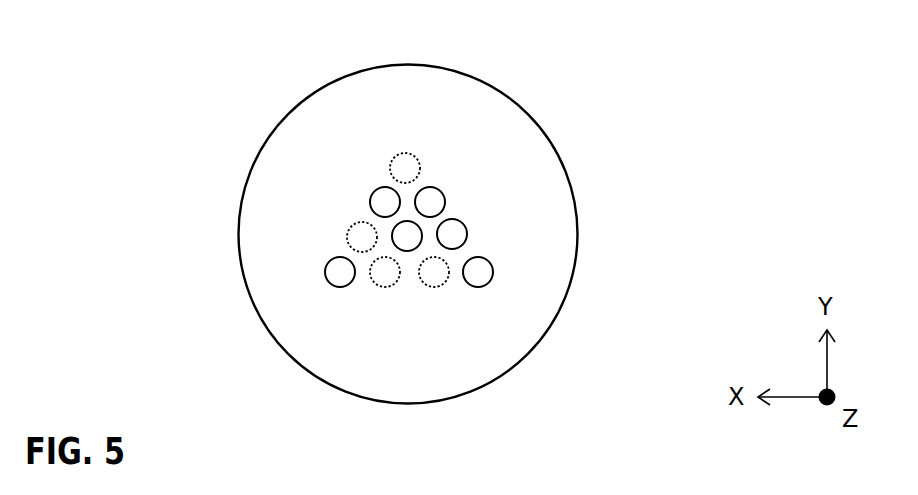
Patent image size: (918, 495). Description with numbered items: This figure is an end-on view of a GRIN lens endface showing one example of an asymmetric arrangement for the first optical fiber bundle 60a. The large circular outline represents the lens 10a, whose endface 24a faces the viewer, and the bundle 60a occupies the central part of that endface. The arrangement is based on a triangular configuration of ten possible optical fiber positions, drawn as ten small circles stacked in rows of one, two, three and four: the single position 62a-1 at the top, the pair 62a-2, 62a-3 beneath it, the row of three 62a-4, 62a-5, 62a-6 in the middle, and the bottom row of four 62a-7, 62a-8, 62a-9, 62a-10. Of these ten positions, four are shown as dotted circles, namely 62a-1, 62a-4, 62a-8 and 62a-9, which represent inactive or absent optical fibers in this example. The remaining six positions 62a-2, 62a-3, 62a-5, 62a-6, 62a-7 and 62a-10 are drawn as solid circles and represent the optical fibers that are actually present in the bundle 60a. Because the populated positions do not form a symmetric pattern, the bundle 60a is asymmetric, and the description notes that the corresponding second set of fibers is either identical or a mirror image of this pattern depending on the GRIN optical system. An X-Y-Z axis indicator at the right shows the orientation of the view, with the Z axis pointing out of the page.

The ferrule 10a is at (301, 95).
The end face 24a is at (510, 128).
The first optical fiber bundle 60a is at (579, 115).
The optical fiber position 62a-1 is at (408, 152).
The optical fiber 62a-2 is at (373, 192).
The optical fiber 62a-3 is at (447, 193).
The optical fiber position 62a-4 is at (346, 235).
The optical fiber 62a-5 is at (407, 252).
The optical fiber 62a-6 is at (460, 232).
The optical fiber 62a-7 is at (341, 287).
The optical fiber position 62a-8 is at (385, 287).
The optical fiber position 62a-9 is at (434, 287).
The optical fiber 62a-10 is at (482, 287).